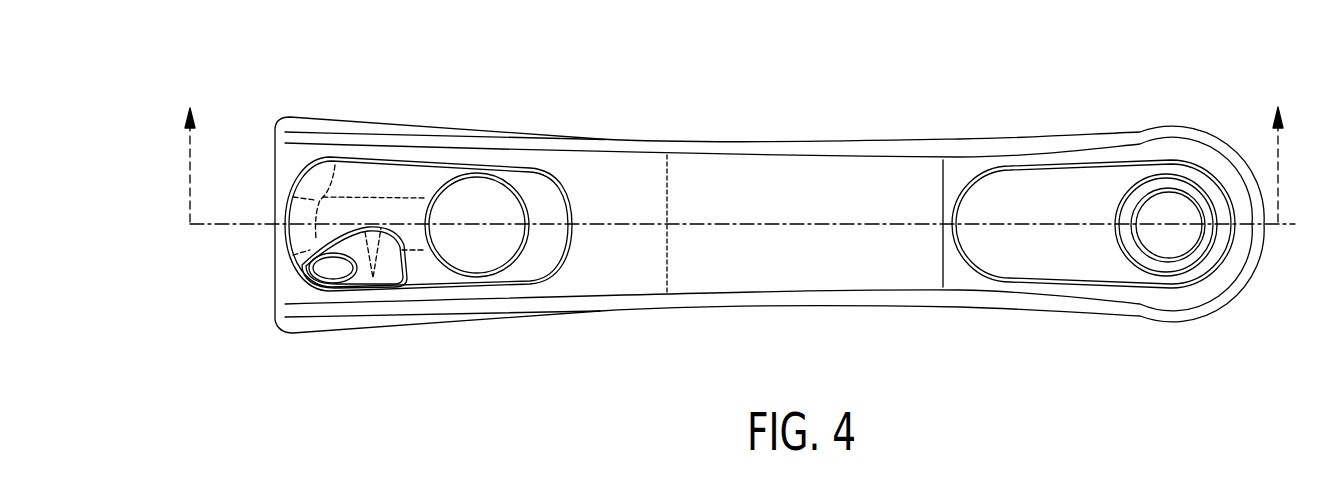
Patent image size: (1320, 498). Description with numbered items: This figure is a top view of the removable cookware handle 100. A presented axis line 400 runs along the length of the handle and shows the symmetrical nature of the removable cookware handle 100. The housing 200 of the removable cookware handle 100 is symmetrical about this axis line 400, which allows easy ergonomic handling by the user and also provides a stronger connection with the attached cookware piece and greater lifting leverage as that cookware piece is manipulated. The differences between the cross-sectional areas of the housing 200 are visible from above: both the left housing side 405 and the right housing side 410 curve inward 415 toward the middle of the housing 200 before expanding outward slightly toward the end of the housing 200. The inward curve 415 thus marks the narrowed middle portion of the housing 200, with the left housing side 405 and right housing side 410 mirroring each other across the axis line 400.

The removable cookware handle 100 is at (1076, 88).
The housing 200 is at (768, 143).
The axis line 400 is at (734, 141).
The left housing side 405 is at (310, 333).
The right housing side 410 is at (312, 118).
The inward curve 415 is at (1018, 345).